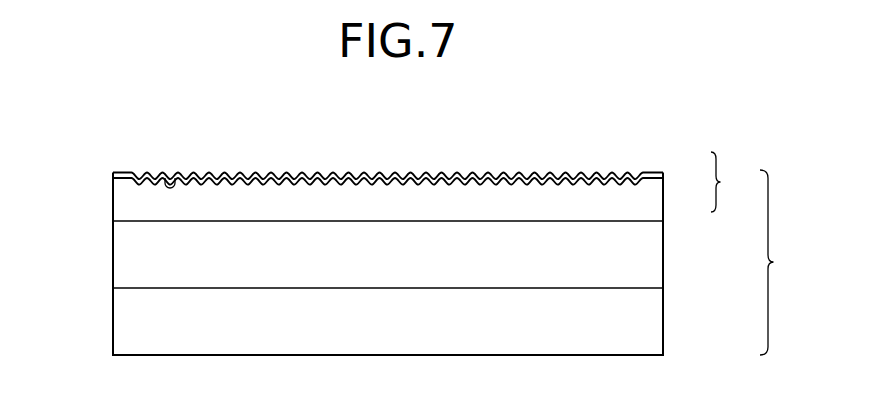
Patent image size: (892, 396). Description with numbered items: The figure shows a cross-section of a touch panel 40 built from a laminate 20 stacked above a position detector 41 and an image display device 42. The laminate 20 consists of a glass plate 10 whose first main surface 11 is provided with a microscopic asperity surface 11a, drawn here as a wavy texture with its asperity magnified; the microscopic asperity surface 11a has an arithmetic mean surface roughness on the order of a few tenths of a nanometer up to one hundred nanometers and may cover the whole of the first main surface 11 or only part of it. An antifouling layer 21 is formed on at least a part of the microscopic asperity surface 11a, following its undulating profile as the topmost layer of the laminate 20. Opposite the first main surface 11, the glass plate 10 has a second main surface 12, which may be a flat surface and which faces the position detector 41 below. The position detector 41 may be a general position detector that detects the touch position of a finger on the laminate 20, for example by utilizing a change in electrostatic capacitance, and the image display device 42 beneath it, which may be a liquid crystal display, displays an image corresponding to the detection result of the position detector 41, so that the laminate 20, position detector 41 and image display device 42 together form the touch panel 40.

The glass plate 10 is at (652, 198).
The first main surface 11 is at (125, 178).
The microscopic asperity surface 11a is at (173, 186).
The second main surface 12 is at (125, 221).
The laminate 20 is at (753, 192).
The antifouling layer 21 is at (655, 172).
The touch panel 40 is at (804, 275).
The position detector 41 is at (652, 253).
The image display device 42 is at (652, 320).